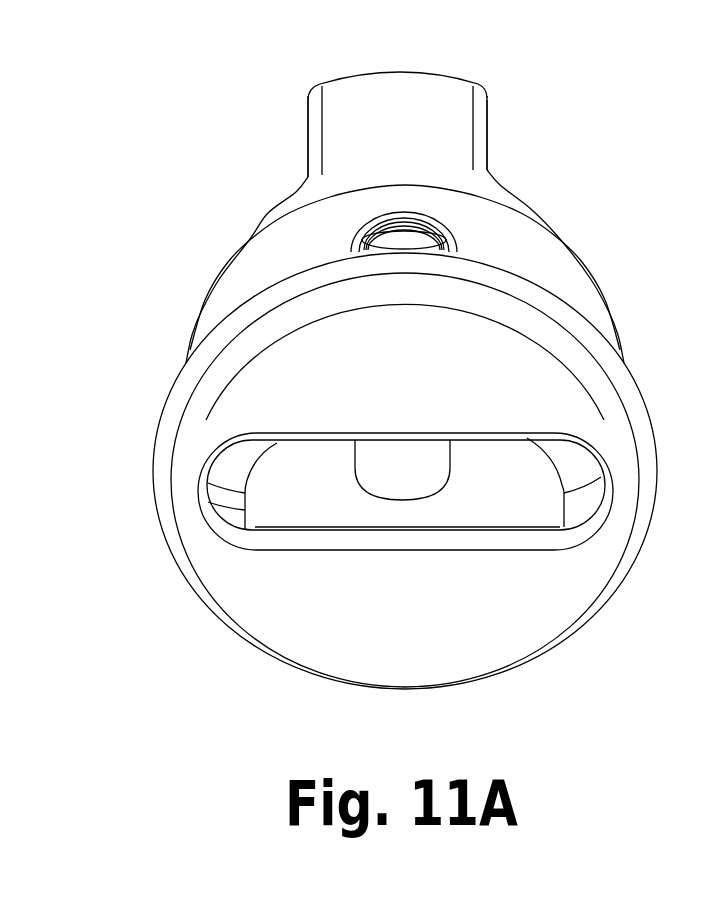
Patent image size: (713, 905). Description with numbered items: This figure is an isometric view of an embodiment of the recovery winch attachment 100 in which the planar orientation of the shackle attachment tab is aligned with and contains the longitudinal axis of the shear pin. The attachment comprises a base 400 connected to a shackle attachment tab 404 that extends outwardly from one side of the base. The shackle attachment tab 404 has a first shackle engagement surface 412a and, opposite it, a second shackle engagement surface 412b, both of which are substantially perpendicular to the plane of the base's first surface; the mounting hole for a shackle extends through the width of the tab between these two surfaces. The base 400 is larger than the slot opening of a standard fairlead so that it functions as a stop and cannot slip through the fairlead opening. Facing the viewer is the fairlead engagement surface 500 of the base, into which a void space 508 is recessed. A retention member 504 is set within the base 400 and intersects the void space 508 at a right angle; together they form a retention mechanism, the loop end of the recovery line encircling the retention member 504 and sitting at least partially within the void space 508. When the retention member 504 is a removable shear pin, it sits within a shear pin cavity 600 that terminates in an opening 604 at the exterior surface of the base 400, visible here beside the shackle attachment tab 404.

The recovery winch attachment 100 is at (262, 98).
The base 400 is at (232, 624).
The shackle attachment tab 404 is at (450, 133).
The first shackle engagement surface 412a is at (308, 133).
The second shackle engagement surface 412b is at (487, 138).
The fairlead engagement surface 500 is at (540, 620).
The retention member 504 is at (417, 455).
The void space 508 is at (577, 483).
The shear pin cavity 600 is at (415, 243).
The opening 604 is at (352, 243).